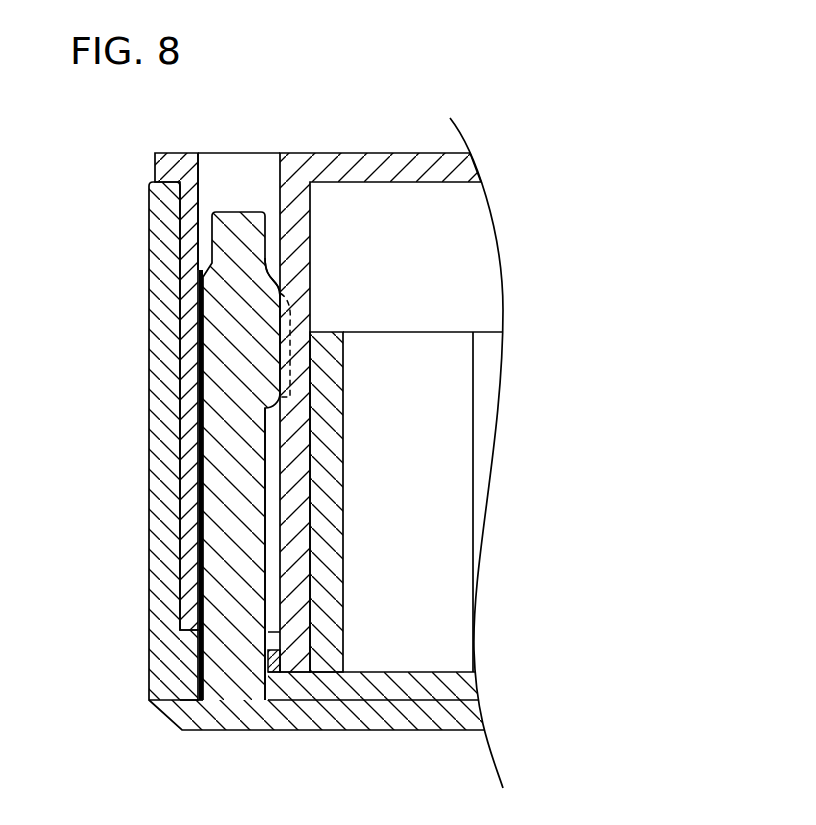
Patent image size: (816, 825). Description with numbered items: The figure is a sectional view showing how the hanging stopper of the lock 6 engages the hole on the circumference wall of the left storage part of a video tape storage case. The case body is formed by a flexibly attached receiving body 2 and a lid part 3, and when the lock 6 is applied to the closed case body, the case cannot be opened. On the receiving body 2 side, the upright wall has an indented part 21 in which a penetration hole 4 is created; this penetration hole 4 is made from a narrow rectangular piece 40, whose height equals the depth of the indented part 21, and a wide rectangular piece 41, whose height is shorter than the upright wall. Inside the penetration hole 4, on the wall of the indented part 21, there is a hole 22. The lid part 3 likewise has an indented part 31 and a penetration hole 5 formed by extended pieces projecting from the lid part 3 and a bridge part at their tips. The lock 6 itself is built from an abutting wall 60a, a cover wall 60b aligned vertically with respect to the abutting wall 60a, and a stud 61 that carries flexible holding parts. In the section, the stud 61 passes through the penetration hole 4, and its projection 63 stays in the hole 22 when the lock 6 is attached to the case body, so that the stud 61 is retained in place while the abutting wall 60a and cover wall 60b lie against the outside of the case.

The receiving body 2 is at (305, 152).
The lid part 3 is at (350, 704).
The penetration hole 4 is at (237, 170).
The penetration hole 5 is at (209, 690).
The lock 6 is at (314, 733).
The indented part 21 is at (277, 525).
The hole 22 is at (294, 278).
The indented part 31 is at (300, 638).
The narrow rectangular piece 40 is at (209, 166).
The wide rectangular piece 41 is at (167, 214).
The abutting wall 60a is at (442, 732).
The cover wall 60b is at (148, 369).
The stud 61 is at (206, 413).
The projection 63 is at (296, 327).